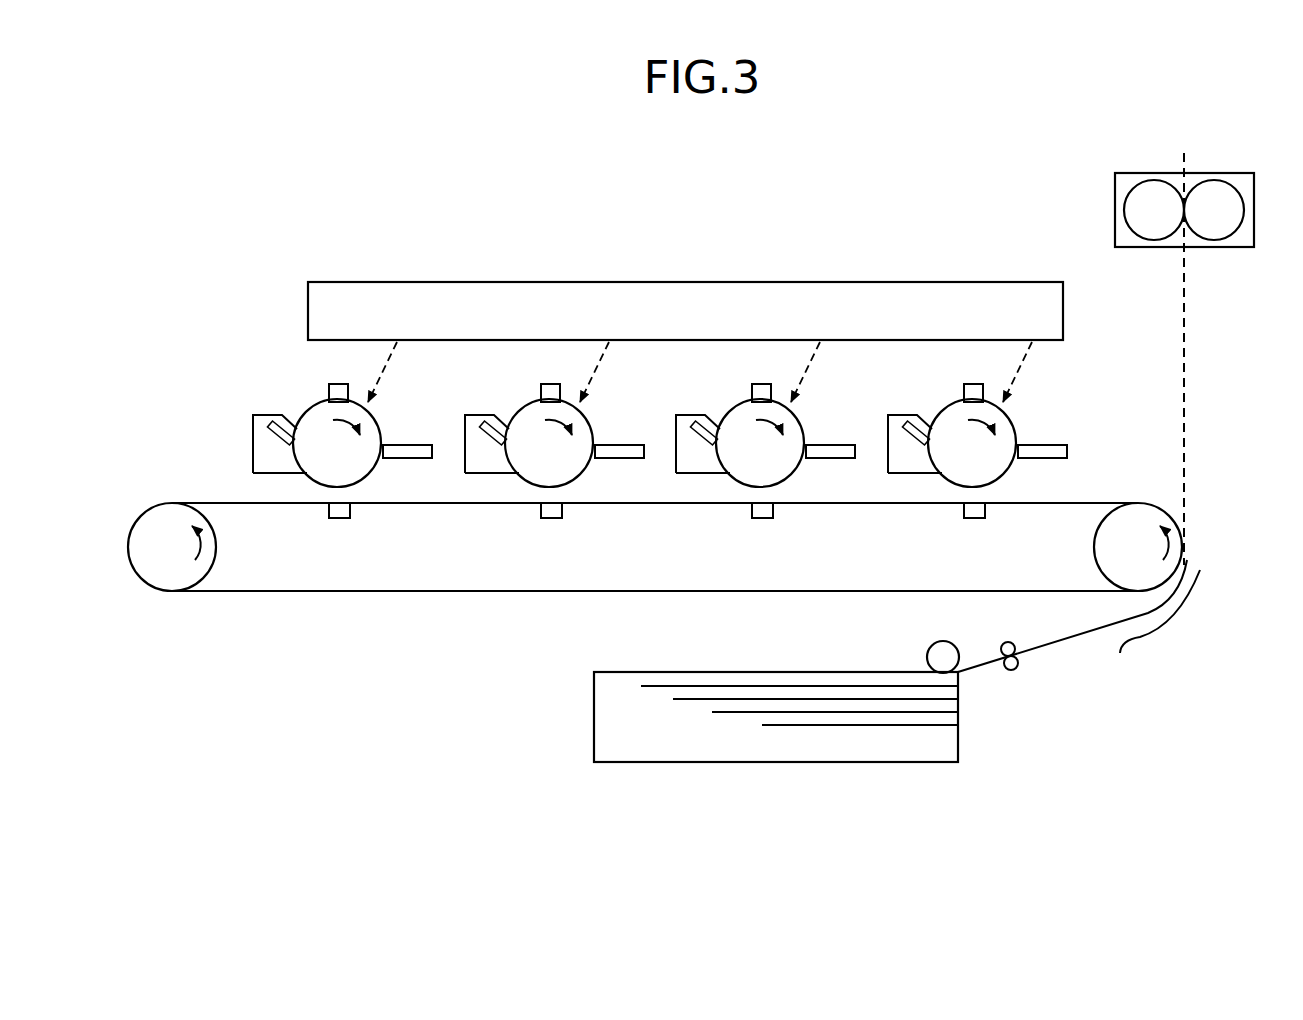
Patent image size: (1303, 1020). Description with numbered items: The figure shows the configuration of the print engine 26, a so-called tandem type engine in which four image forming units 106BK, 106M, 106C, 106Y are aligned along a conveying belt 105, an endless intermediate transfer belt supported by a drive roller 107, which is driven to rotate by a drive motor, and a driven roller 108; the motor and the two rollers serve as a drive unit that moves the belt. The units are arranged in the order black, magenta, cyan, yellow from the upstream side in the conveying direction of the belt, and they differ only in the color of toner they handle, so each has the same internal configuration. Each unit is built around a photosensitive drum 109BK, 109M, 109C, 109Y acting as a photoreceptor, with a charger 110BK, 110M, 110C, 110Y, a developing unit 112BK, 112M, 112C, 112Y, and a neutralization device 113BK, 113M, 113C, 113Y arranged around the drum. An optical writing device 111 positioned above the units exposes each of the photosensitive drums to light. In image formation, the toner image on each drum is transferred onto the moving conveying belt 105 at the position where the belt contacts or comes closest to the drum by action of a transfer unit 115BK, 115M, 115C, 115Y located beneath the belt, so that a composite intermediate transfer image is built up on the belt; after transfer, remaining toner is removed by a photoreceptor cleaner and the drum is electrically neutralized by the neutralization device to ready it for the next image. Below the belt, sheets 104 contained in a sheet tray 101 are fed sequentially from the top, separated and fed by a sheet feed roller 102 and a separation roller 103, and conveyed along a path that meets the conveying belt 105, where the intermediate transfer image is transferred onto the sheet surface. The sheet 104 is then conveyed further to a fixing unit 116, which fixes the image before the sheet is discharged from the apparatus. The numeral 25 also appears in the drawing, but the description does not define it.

The sheet feeding unit 25 is at (576, 765).
The print engine 26 is at (155, 274).
The sheet tray 101 is at (597, 672).
The sheet feed roller 102 is at (927, 645).
The separation roller 103 is at (1015, 672).
The sheet 104 is at (752, 672).
The conveying belt 105 is at (482, 591).
The image forming unit 106Y is at (405, 372).
The image forming unit 106C is at (617, 372).
The image forming unit 106M is at (828, 372).
The image forming unit 106BK is at (1040, 374).
The drive roller 107 is at (137, 577).
The driven roller 108 is at (1097, 575).
The photosensitive drum 109Y is at (373, 470).
The photosensitive drum 109C is at (585, 470).
The photosensitive drum 109M is at (796, 470).
The photosensitive drum 109BK is at (1008, 470).
The charger 110Y is at (337, 384).
The charger 110C is at (549, 384).
The charger 110M is at (760, 384).
The charger 110BK is at (972, 384).
The optical writing device 111 is at (1063, 282).
The developing unit 112Y is at (400, 445).
The developing unit 112C is at (612, 445).
The developing unit 112M is at (823, 445).
The developing unit 112BK is at (1035, 445).
The neutralization device 113Y is at (267, 415).
The neutralization device 113C is at (479, 415).
The neutralization device 113M is at (690, 415).
The neutralization device 113BK is at (902, 415).
The transfer unit 115Y is at (338, 518).
The transfer unit 115C is at (550, 518).
The transfer unit 115M is at (761, 518).
The transfer unit 115BK is at (973, 518).
The fixing unit 116 is at (1250, 173).